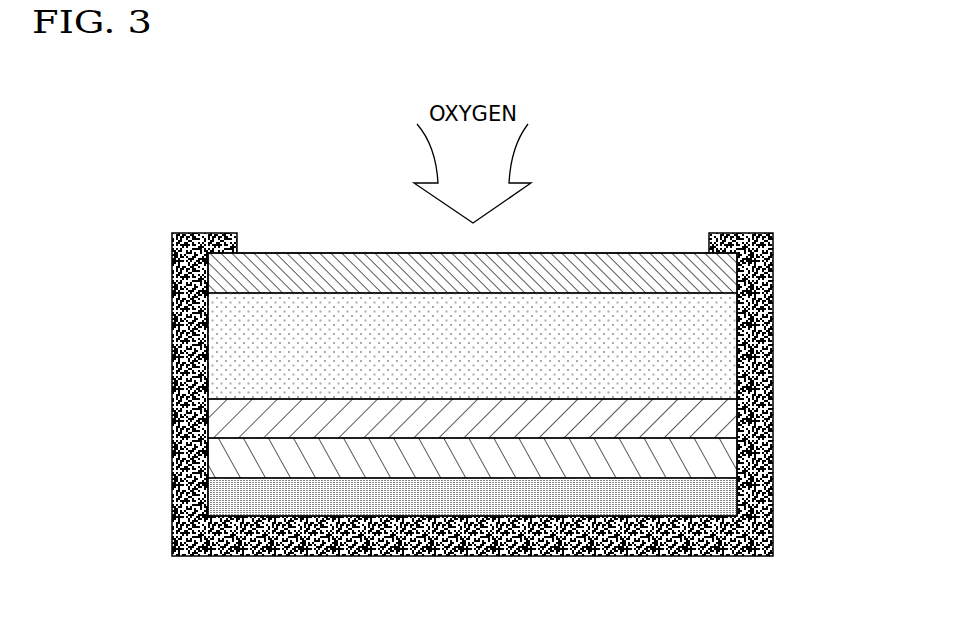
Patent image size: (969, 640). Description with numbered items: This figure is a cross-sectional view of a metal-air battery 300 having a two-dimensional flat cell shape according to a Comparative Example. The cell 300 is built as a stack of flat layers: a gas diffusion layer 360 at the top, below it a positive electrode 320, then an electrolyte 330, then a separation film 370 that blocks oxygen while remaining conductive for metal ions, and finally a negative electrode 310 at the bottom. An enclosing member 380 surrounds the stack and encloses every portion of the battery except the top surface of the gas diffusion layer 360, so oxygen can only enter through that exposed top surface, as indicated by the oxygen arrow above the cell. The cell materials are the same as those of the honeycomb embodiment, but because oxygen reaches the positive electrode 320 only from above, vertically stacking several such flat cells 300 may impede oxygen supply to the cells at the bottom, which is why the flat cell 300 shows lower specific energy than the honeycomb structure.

The metal-air battery 300 is at (521, 311).
The negative electrode 310 is at (723, 496).
The positive electrode 320 is at (723, 340).
The electrolyte 330 is at (725, 420).
The gas diffusion layer 360 is at (725, 272).
The separation film 370 is at (723, 458).
The enclosing member 380 is at (757, 528).